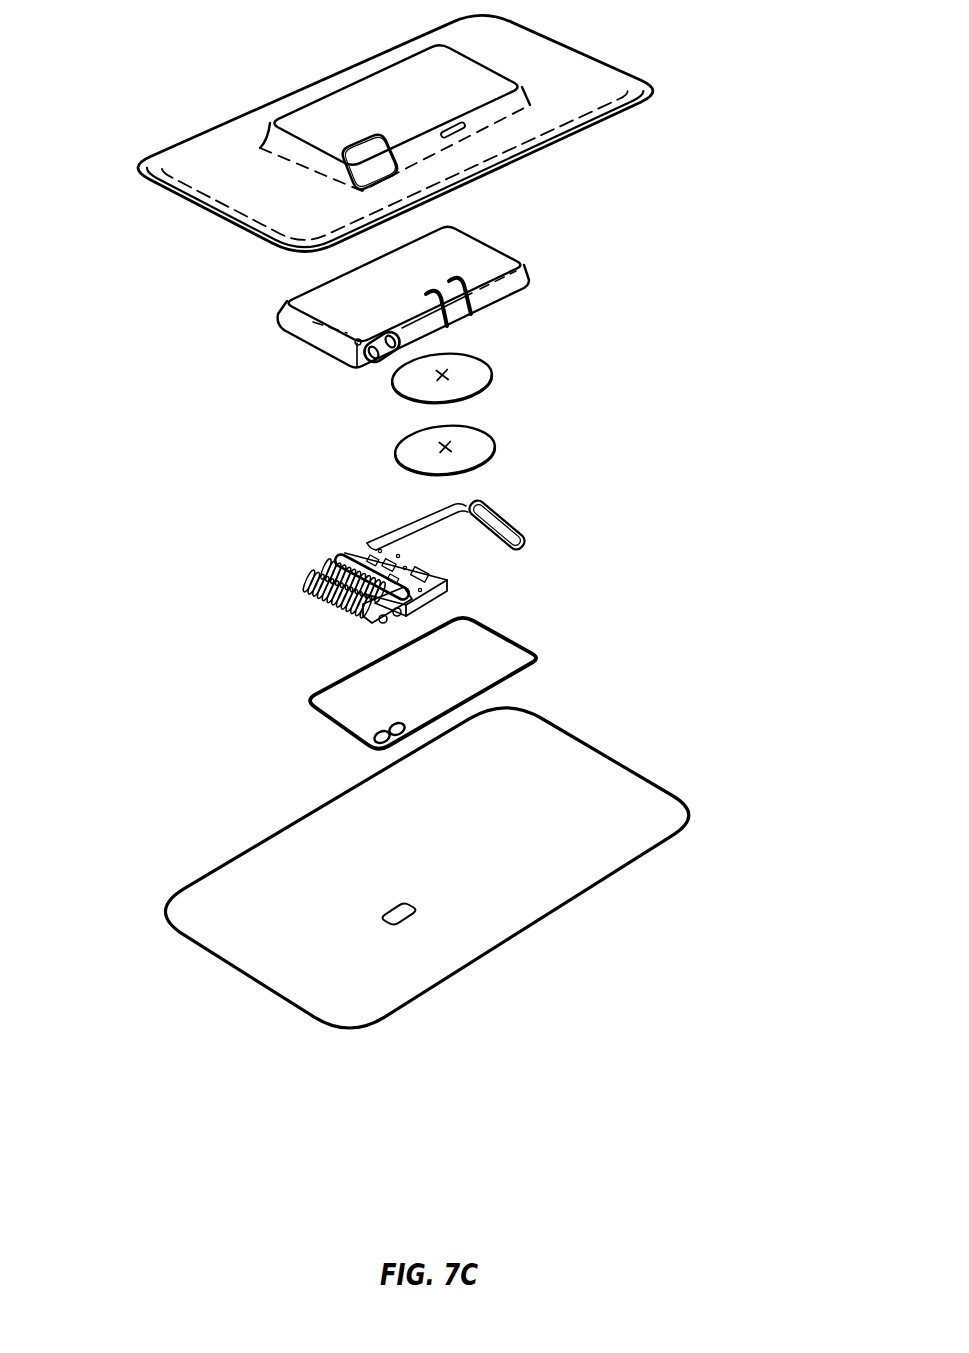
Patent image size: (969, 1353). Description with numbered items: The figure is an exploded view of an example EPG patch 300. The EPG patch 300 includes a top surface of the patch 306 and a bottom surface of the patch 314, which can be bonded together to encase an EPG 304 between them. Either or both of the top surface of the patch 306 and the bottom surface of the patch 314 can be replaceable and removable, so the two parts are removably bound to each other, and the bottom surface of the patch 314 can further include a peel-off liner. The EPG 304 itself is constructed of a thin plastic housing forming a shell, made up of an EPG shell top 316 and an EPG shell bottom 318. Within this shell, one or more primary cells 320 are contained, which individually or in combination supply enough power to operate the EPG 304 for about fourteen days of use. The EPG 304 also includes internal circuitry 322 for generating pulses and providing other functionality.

The EPG patch 300 is at (413, 521).
The EPG 304 is at (152, 288).
The top surface of the patch 306 is at (587, 104).
The bottom surface of the patch 314 is at (600, 853).
The EPG shell top 316 is at (317, 347).
The EPG shell bottom 318 is at (317, 707).
The primary cells 320 is at (465, 452).
The internal circuitry 322 is at (514, 553).